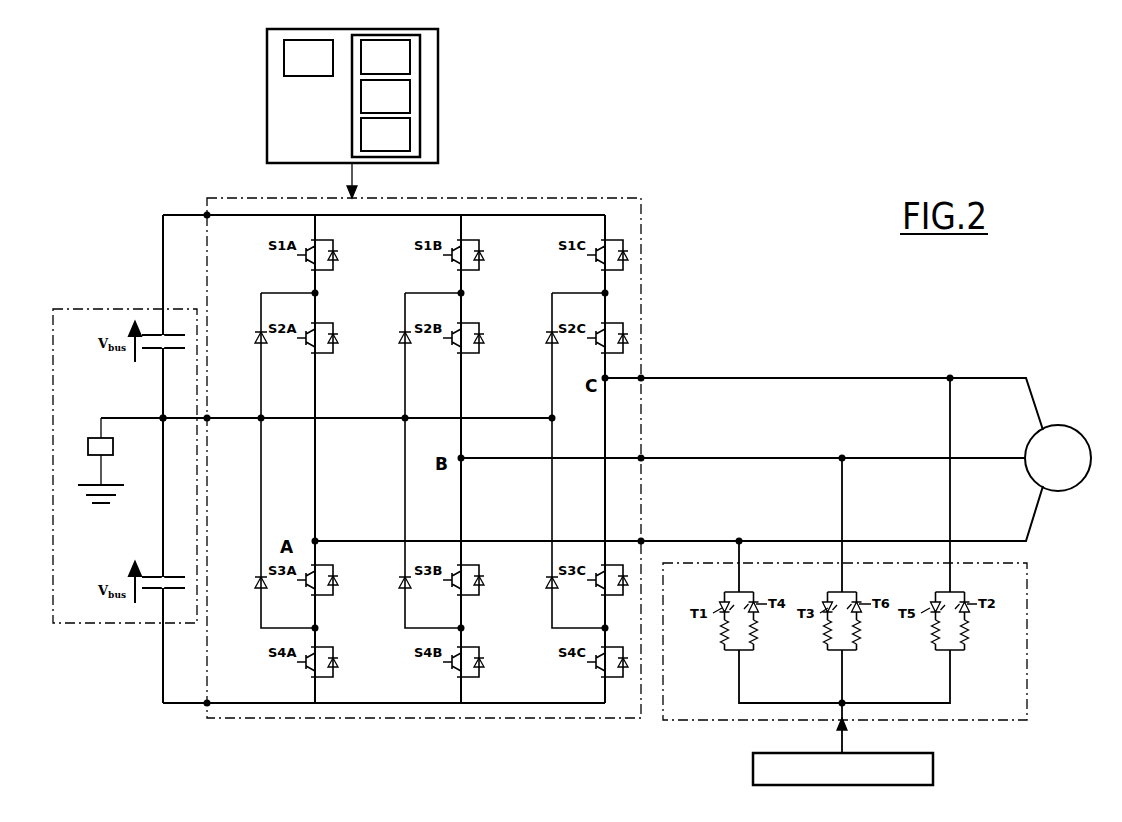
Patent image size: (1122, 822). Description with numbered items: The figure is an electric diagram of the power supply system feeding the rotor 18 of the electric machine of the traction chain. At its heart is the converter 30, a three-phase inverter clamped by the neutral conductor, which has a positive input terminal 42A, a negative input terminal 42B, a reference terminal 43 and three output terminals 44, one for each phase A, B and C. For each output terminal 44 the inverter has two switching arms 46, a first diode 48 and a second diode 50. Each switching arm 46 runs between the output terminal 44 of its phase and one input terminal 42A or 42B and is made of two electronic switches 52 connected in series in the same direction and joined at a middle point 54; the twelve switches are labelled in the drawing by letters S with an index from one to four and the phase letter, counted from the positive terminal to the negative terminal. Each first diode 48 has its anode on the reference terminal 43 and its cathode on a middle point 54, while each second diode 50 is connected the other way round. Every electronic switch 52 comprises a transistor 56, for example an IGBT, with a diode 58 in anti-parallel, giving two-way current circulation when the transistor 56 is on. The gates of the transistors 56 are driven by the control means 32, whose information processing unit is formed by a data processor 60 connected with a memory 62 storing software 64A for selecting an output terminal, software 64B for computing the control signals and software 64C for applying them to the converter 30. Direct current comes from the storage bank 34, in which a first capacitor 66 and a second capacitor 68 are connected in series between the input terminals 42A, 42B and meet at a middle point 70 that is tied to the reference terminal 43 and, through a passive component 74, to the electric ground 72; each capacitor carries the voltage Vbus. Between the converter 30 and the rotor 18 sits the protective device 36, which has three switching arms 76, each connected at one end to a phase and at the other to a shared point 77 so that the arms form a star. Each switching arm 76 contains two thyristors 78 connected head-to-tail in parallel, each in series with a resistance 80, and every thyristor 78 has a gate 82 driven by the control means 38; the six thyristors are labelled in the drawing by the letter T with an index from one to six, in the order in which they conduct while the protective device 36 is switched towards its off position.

The rotor 18 is at (1068, 428).
The converter 30 is at (645, 207).
The control means 32 is at (438, 103).
The storage bank 34 is at (60, 309).
The protective device 36 is at (1028, 578).
The control means 38 is at (933, 768).
The positive input terminal 42A is at (207, 198).
The negative input terminal 42B is at (207, 703).
The reference terminal 43 is at (207, 418).
The output terminal 44 is at (678, 443).
The switching arm 46 is at (344, 313).
The first diode 48 is at (390, 352).
The second diode 50 is at (391, 562).
The electronic switch 52 is at (333, 238).
The middle point 54 is at (476, 462).
The transistor 56 is at (436, 438).
The diode 58 is at (511, 421).
The data processor 60 is at (308, 58).
The memory 62 is at (352, 125).
The software for selecting an output terminal 64A is at (385, 57).
The software for computing control signals 64B is at (385, 96).
The software for applying control signals 64C is at (385, 134).
The first capacitor 66 is at (160, 350).
The second capacitor 68 is at (160, 577).
The middle point 70 is at (163, 420).
The electric ground 72 is at (87, 485).
The passive component 74 is at (94, 440).
The switching arm 76 is at (859, 668).
The shared point 77 is at (841, 704).
The thyristor 78 is at (850, 608).
The resistance 80 is at (853, 680).
The gate 82 is at (838, 623).